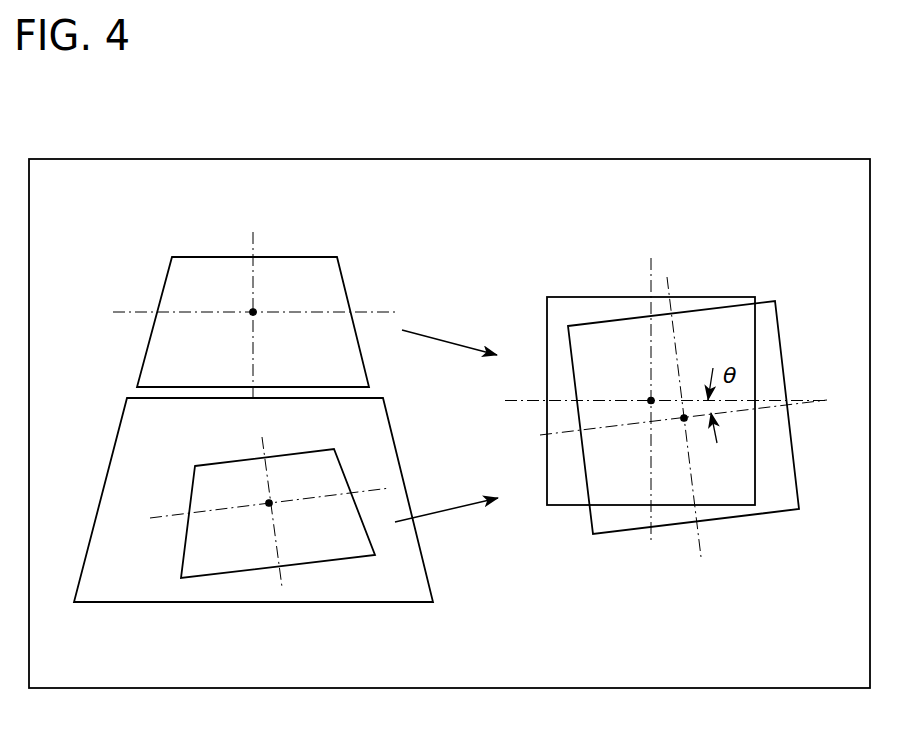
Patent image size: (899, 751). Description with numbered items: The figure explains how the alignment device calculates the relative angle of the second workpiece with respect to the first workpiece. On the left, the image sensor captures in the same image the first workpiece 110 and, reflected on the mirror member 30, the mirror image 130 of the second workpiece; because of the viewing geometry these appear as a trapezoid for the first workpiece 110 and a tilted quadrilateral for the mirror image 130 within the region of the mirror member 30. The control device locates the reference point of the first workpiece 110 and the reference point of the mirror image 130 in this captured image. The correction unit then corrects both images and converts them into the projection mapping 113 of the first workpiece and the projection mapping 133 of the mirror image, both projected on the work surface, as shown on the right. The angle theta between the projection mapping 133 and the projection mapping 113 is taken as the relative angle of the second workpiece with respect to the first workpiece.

The mirror member 30 is at (106, 477).
The first workpiece 110 is at (186, 257).
The projection mapping of the first workpiece 113 is at (723, 296).
The mirror image of the second workpiece 130 is at (182, 553).
The projection mapping of the mirror image of the second workpiece 133 is at (800, 480).